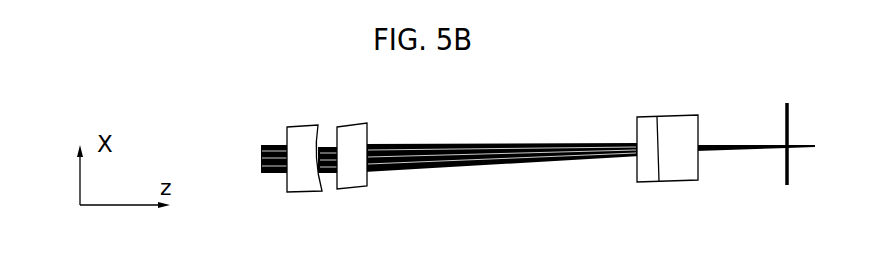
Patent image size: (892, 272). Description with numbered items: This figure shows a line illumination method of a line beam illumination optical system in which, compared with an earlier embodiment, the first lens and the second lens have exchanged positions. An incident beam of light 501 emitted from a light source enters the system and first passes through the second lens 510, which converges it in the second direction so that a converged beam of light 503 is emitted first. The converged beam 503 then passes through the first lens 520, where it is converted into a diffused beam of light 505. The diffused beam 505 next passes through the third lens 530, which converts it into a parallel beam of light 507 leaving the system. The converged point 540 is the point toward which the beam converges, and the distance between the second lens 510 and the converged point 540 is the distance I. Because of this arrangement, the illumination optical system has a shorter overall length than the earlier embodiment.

The incident beam of light 501 is at (272, 175).
The second lens 510 is at (300, 192).
The converged beam of light 503 is at (330, 177).
The first lens 520 is at (352, 190).
The diffused beam of light 505 is at (495, 162).
The third lens 530 is at (648, 183).
The parallel beam of light 507 is at (738, 150).
The converged point 540 is at (787, 187).